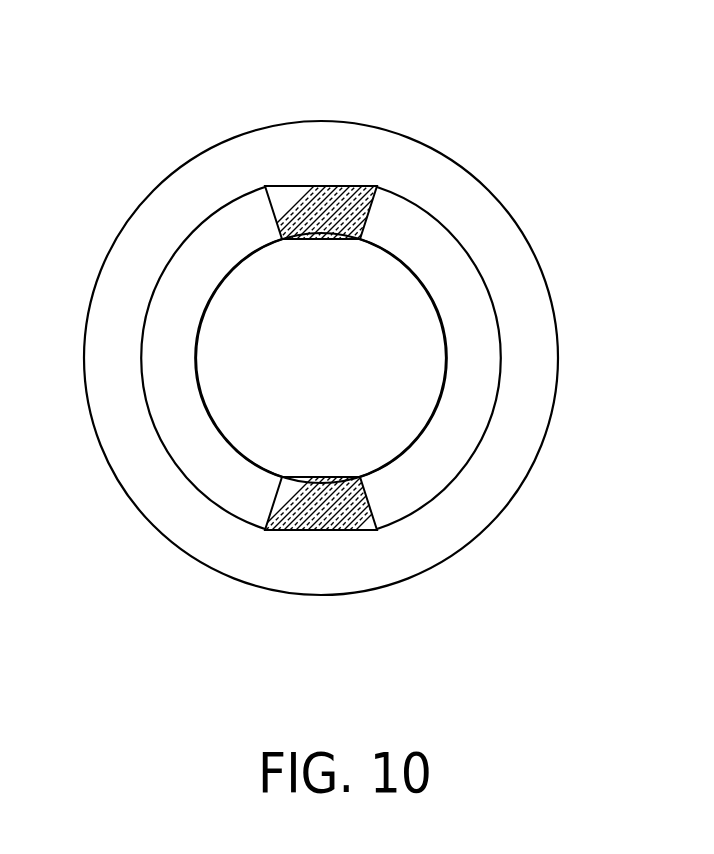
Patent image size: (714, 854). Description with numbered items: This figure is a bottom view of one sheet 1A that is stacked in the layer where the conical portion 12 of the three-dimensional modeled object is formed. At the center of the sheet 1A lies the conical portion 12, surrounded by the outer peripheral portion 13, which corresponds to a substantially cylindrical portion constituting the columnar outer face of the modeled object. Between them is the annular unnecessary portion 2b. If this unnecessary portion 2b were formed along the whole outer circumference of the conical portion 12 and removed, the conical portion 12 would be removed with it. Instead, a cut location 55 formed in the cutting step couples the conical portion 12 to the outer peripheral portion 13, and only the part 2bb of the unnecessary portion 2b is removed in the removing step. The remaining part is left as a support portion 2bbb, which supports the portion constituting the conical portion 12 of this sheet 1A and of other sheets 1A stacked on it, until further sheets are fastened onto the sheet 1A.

The sheet 1A is at (321, 335).
The unnecessary portion 2b is at (321, 335).
The part of the unnecessary portion 2bb is at (437, 233).
The support portion 2bbb is at (338, 362).
The conical portion 12 is at (247, 312).
The outer peripheral portion 13 is at (202, 175).
The cut location 55 is at (321, 362).